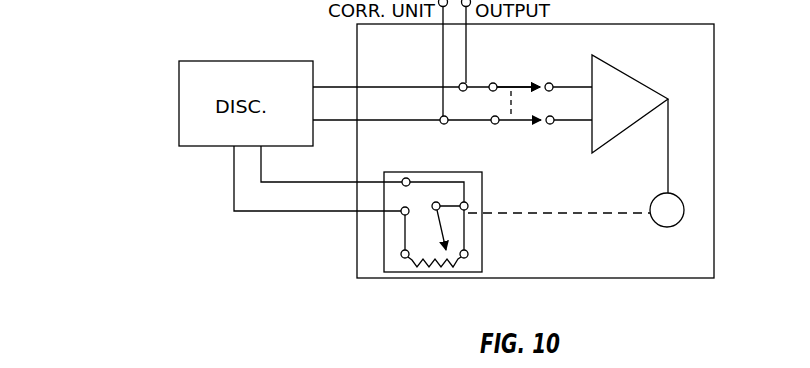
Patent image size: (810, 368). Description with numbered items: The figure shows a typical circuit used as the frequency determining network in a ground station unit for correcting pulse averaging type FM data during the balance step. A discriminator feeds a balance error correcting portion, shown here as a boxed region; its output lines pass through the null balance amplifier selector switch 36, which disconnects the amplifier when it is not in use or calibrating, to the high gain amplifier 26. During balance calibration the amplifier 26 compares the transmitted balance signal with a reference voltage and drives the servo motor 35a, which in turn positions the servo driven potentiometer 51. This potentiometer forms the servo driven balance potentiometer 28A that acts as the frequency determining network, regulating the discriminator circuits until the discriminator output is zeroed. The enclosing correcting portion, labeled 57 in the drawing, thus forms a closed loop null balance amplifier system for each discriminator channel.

The balance error correcting portion 57 is at (724, 38).
The high gain amplifier 26 is at (639, 82).
The null balance amplifier selector switch 36 is at (523, 123).
The servo driven potentiometer 51 is at (482, 222).
The servo motor 35a is at (667, 227).
The servo driven balance potentiometer 28A is at (384, 236).